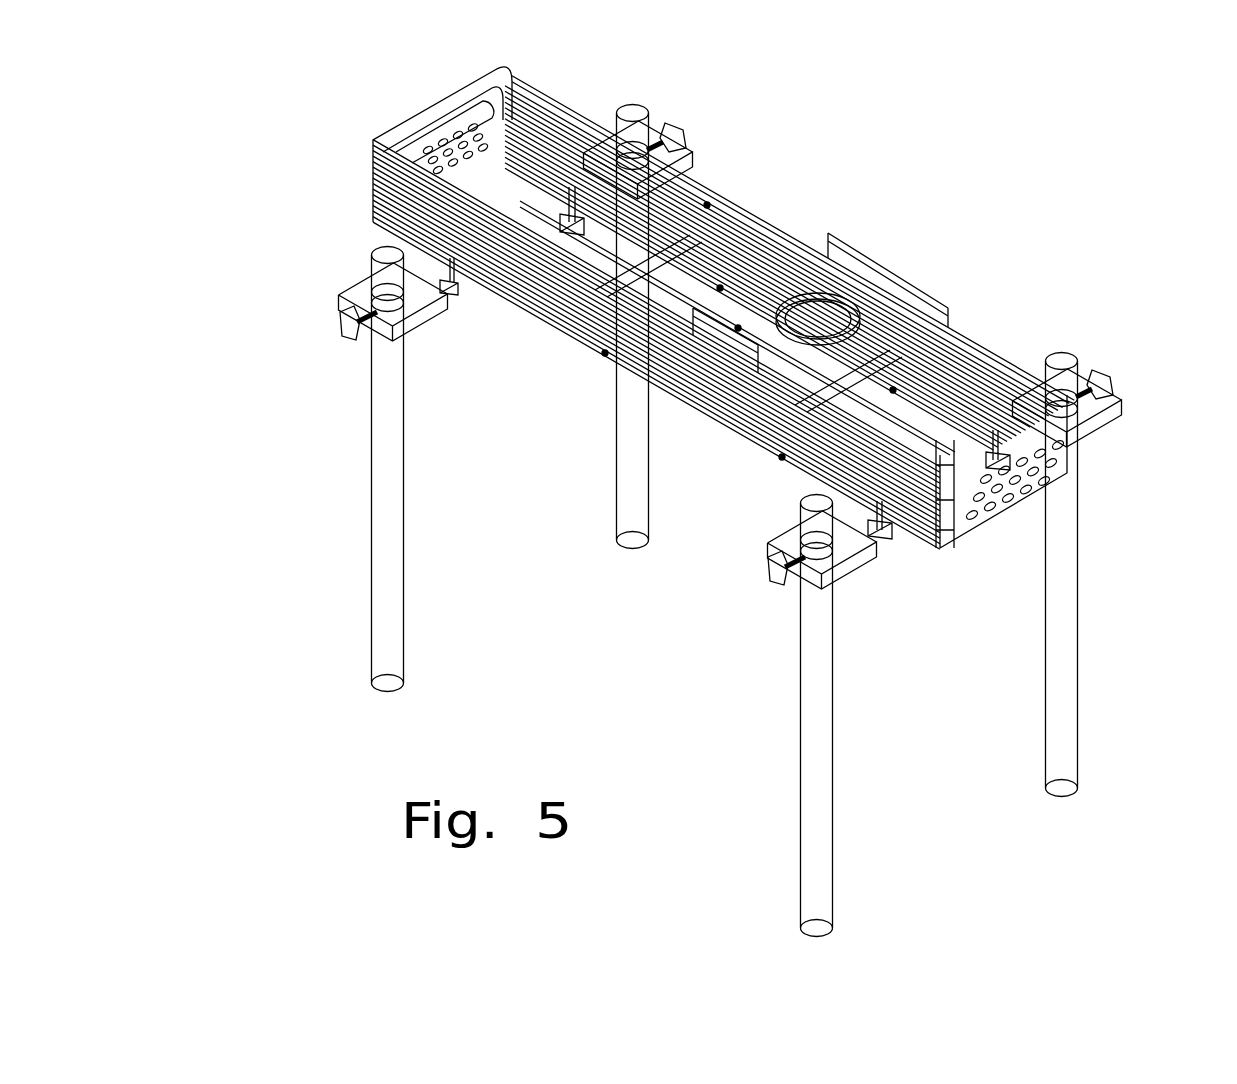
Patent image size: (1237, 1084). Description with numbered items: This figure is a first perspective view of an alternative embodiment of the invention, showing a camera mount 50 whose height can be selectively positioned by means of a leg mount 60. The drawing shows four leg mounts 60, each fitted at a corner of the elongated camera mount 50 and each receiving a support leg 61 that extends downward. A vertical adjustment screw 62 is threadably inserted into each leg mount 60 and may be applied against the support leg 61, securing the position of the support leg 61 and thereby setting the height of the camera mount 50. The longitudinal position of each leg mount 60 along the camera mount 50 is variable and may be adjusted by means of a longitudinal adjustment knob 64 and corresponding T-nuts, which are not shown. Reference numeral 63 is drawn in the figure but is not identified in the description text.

The camera mount 50 is at (897, 271).
The leg mount 60 is at (347, 292).
The support leg 61 is at (628, 497).
The vertical adjustment screw 62 is at (665, 147).
The nut 63 is at (707, 205).
The longitudinal adjustment knob 64 is at (503, 268).